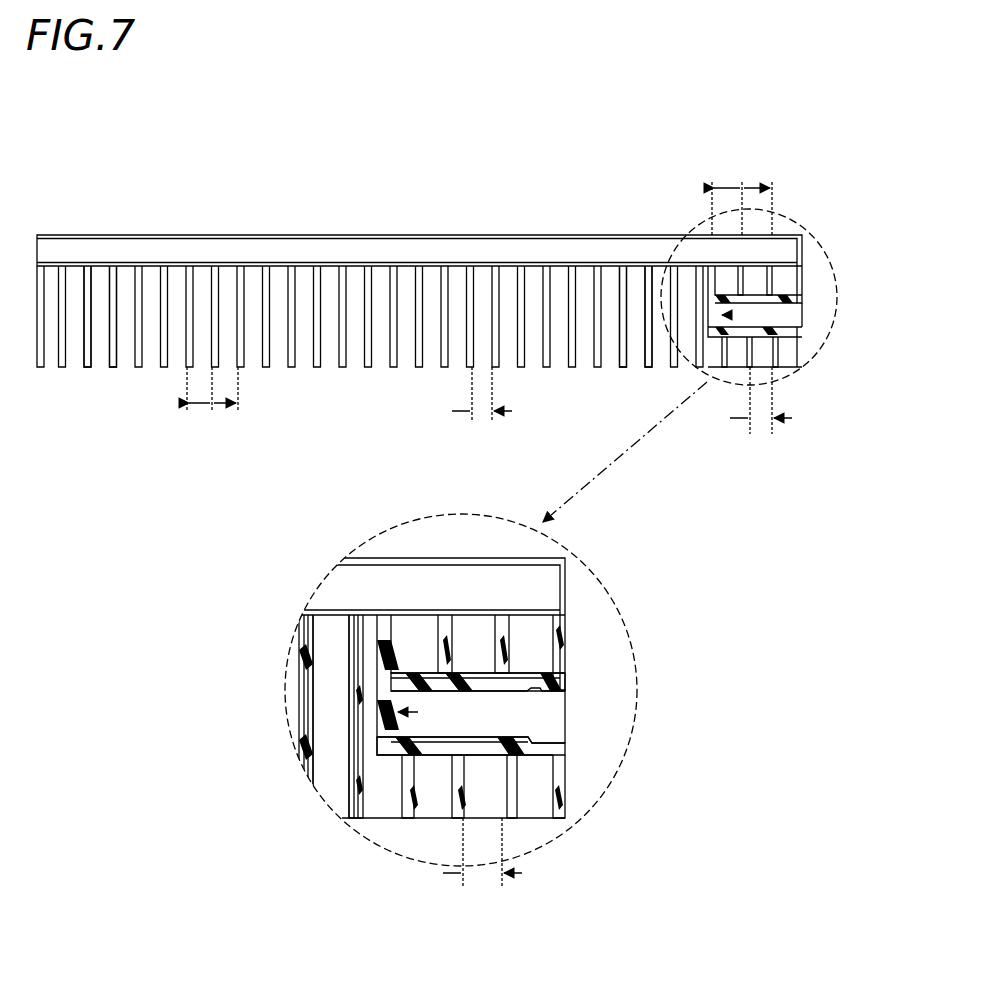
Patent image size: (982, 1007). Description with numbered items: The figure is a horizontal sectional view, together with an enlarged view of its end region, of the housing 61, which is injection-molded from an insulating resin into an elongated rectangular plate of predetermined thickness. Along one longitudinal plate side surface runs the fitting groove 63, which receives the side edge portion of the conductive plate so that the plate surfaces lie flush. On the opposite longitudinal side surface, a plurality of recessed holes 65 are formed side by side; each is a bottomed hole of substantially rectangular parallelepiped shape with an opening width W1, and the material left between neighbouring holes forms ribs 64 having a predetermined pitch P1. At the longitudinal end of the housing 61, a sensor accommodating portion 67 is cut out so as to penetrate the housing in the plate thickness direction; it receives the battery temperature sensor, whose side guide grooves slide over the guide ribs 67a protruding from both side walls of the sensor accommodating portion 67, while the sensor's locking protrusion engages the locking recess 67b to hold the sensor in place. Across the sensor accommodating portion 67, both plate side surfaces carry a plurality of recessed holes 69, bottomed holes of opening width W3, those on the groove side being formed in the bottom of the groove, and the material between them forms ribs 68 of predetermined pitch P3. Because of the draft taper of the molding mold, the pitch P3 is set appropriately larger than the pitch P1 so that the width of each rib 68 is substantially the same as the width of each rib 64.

The housing 61 is at (443, 540).
The fitting groove 63 is at (313, 260).
The ribs 64 is at (111, 325).
The recessed holes 65 is at (102, 275).
The sensor accommodating portion 67 is at (802, 360).
The guide ribs 67a is at (467, 736).
The locking recess 67b is at (540, 690).
The ribs 68 is at (771, 273).
The recessed holes 69 is at (728, 292).
The predetermined pitch P1 is at (222, 406).
The predetermined pitch P3 is at (752, 186).
The opening width W1 is at (482, 409).
The opening width W3 is at (617, 642).